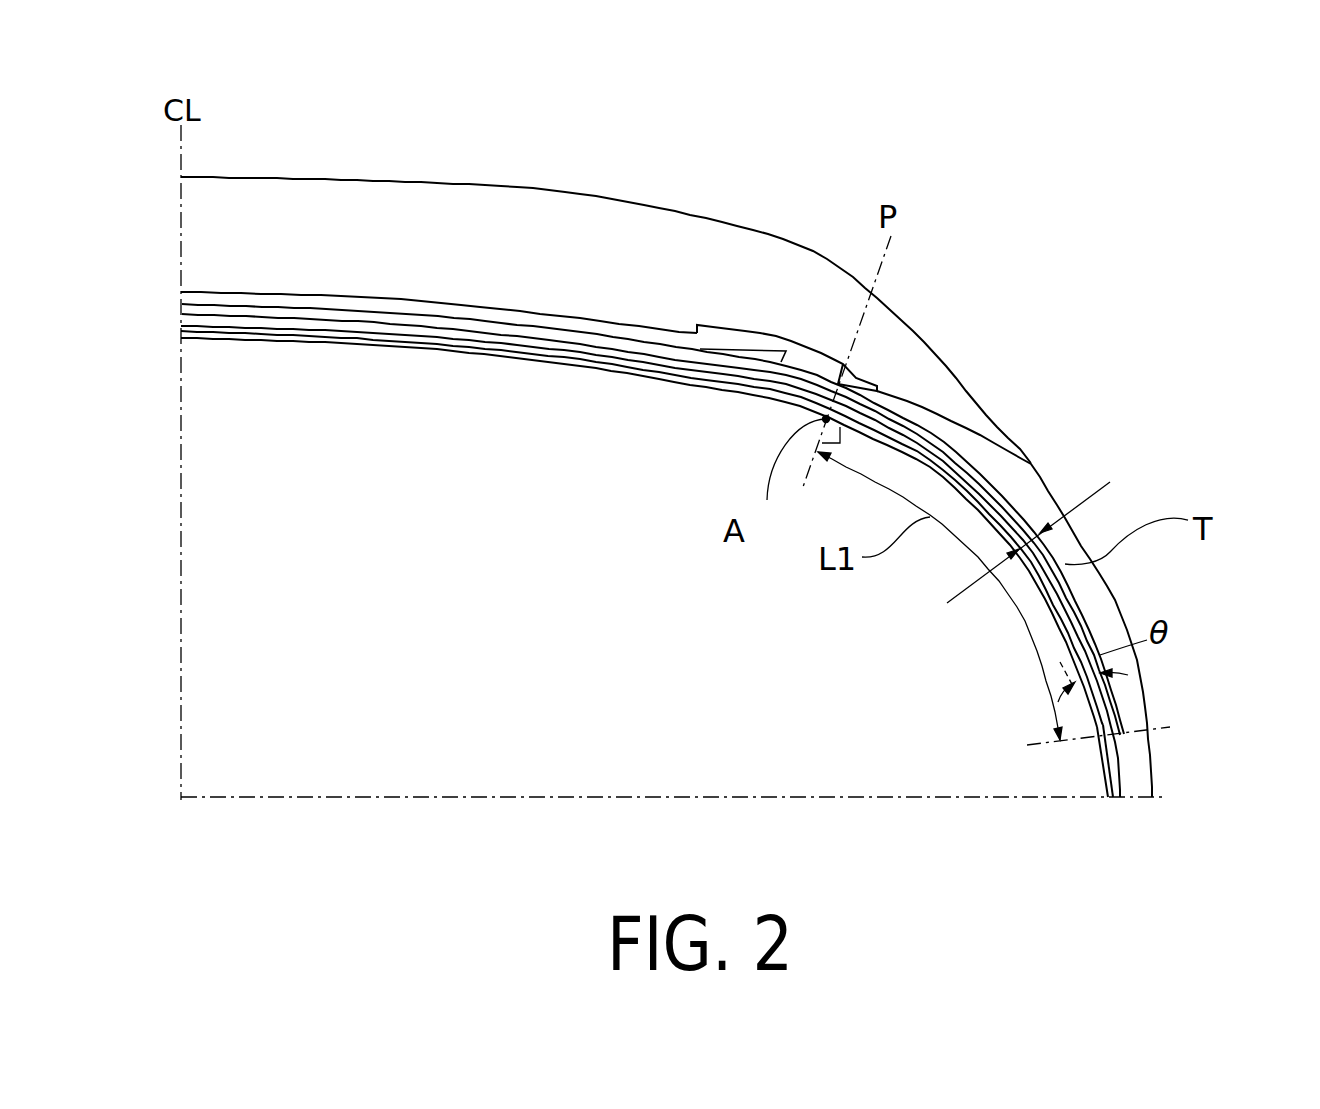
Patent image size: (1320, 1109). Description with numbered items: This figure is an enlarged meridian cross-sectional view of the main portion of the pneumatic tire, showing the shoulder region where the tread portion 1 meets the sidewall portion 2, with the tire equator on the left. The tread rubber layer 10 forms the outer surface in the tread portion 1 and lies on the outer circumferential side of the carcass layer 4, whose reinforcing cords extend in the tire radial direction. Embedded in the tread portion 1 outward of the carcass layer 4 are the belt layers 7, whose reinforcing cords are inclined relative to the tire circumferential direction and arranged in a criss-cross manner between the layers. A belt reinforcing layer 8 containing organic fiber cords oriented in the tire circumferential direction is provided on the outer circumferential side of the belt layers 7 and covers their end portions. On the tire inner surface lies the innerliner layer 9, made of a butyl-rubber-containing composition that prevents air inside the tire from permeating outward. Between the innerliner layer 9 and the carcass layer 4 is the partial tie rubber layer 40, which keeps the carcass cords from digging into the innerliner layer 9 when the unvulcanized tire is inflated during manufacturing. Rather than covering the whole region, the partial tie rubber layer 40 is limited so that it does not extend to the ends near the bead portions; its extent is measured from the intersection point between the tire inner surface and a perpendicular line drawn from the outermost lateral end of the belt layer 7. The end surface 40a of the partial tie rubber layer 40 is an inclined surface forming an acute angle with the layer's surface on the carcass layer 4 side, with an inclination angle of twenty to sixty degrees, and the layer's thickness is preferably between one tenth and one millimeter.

The tread portion 1 is at (336, 156).
The sidewall portion 2 is at (1174, 780).
The carcass layer 4 is at (232, 320).
The belt layer 7 is at (347, 300).
The belt reinforcing layer 8 is at (737, 332).
The innerliner layer 9 is at (487, 353).
The tread rubber layer 10 is at (475, 195).
The partial tie rubber layer 40 is at (1065, 616).
The end surface 40a is at (1099, 733).